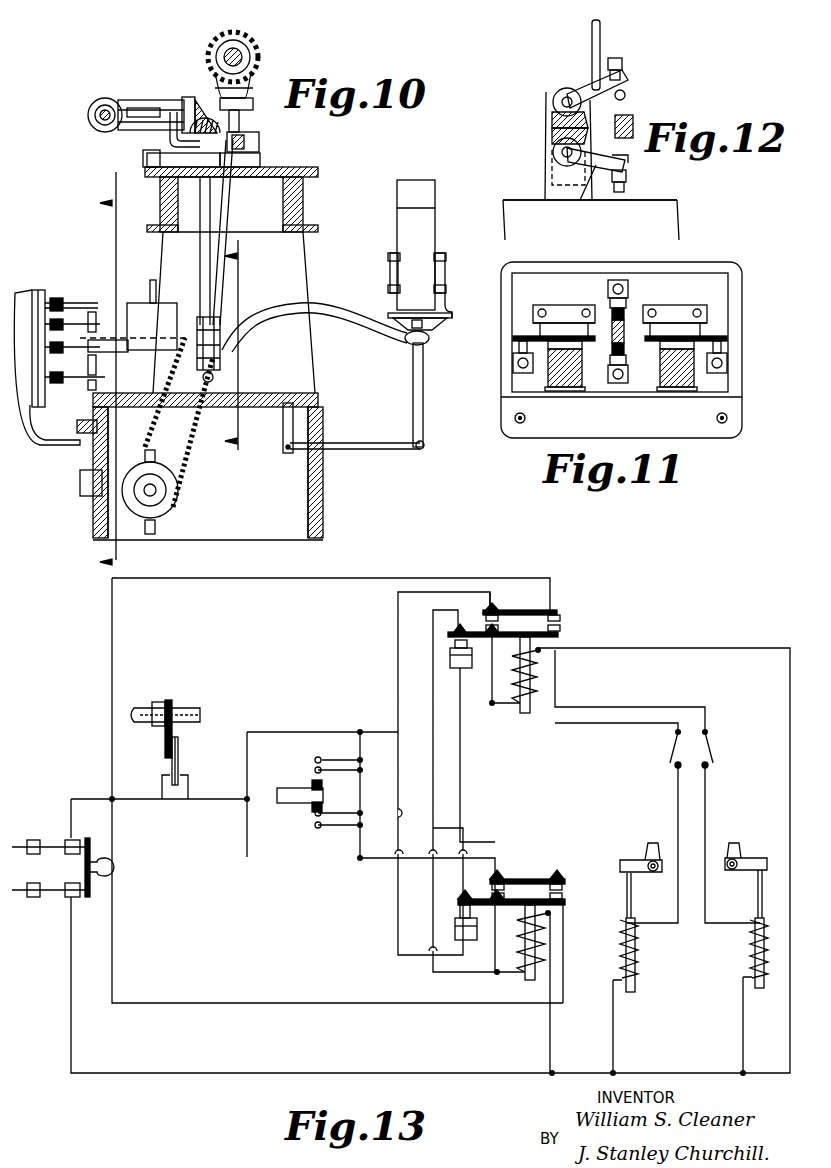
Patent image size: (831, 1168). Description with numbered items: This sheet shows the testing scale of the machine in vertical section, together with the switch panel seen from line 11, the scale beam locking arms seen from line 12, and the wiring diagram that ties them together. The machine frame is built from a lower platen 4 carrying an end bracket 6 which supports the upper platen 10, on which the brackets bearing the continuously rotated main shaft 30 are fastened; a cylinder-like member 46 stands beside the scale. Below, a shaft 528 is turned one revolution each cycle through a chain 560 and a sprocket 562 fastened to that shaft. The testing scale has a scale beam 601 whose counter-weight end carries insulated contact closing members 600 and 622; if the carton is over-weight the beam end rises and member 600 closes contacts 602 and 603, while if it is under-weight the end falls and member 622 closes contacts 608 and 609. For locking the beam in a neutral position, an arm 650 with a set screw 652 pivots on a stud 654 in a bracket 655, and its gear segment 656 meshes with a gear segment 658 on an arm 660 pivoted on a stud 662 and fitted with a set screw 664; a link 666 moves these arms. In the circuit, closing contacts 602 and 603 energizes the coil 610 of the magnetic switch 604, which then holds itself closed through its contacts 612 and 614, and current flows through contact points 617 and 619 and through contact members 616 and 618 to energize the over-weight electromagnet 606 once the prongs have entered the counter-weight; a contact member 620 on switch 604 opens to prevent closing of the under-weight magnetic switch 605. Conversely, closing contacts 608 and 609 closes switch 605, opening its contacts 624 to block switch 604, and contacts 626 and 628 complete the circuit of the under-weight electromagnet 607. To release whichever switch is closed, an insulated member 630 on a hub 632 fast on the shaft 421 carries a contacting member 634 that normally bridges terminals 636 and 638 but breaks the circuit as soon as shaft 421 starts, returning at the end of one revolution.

In FIG. 10, the main shaft 30 is at (248, 54).
In FIG. 10, the upper platen 10 is at (318, 167).
In FIG. 10, the end bracket 6 is at (306, 250).
In FIG. 10, the lower platen 4 is at (325, 500).
In FIG. 12, the lower platen 4 is at (670, 195).
In FIG. 10, the cylinder 46 is at (435, 215).
In FIG. 10, the scale beam 601 is at (325, 312).
In FIG. 12, the scale beam 601 is at (633, 120).
In FIG. 10, the stud 654 is at (220, 330).
In FIG. 12, the stud 654 is at (555, 95).
In FIG. 10, the contact point 602 is at (100, 312).
In FIG. 13, the contact point 602 is at (315, 760).
In FIG. 10, the contact point 603 is at (98, 318).
In FIG. 13, the contact point 603 is at (315, 770).
In FIG. 10, the contact closing member 600 is at (95, 335).
In FIG. 13, the contact closing member 600 is at (322, 785).
In FIG. 10, the contact closing member 622 is at (97, 372).
In FIG. 13, the contact closing member 622 is at (322, 807).
In FIG. 10, the contact point 608 is at (93, 388).
In FIG. 13, the contact point 608 is at (315, 813).
In FIG. 10, the contact point 609 is at (85, 392).
In FIG. 13, the contact point 609 is at (315, 825).
In FIG. 10, the chain 560 is at (180, 445).
In FIG. 10, the sprocket 562 is at (175, 478).
In FIG. 10, the shaft 528 is at (165, 497).
In FIG. 10, the section line 11— 11 is at (120, 562).
In FIG. 10, the section line 12— 12 is at (246, 441).
In FIG. 12, the link 666 is at (600, 45).
In FIG. 12, the arm 650 is at (625, 82).
In FIG. 12, the set screw 652 is at (625, 96).
In FIG. 12, the gear segment 656 is at (556, 118).
In FIG. 12, the gear segment 658 is at (560, 137).
In FIG. 12, the stud 662 is at (563, 152).
In FIG. 12, the bracket 655 is at (545, 178).
In FIG. 12, the arm 660 is at (628, 165).
In FIG. 12, the set screw 664 is at (580, 200).
In FIG. 13, the contact 614 is at (483, 628).
In FIG. 13, the contact 612 is at (492, 606).
In FIG. 13, the magnetic switch 604 is at (530, 608).
In FIG. 13, the contact point 617 is at (560, 616).
In FIG. 13, the contact point 619 is at (560, 636).
In FIG. 13, the contact member 620 is at (450, 648).
In FIG. 13, the coil 610 is at (530, 677).
In FIG. 13, the hub 632 is at (158, 703).
In FIG. 13, the insulated member 630 is at (170, 704).
In FIG. 13, the shaft 421 is at (198, 712).
In FIG. 13, the contacting member 634 is at (178, 760).
In FIG. 13, the terminal 636 is at (162, 790).
In FIG. 13, the terminal 638 is at (188, 790).
In FIG. 13, the contact 626 is at (670, 760).
In FIG. 13, the contact 628 is at (678, 768).
In FIG. 13, the contact member 616 is at (713, 762).
In FIG. 13, the contact member 618 is at (708, 767).
In FIG. 13, the magnetic switch 605 is at (527, 878).
In FIG. 13, the contacts 624 is at (455, 920).
In FIG. 13, the electromagnet 607 is at (637, 942).
In FIG. 13, the electromagnet 606 is at (752, 950).